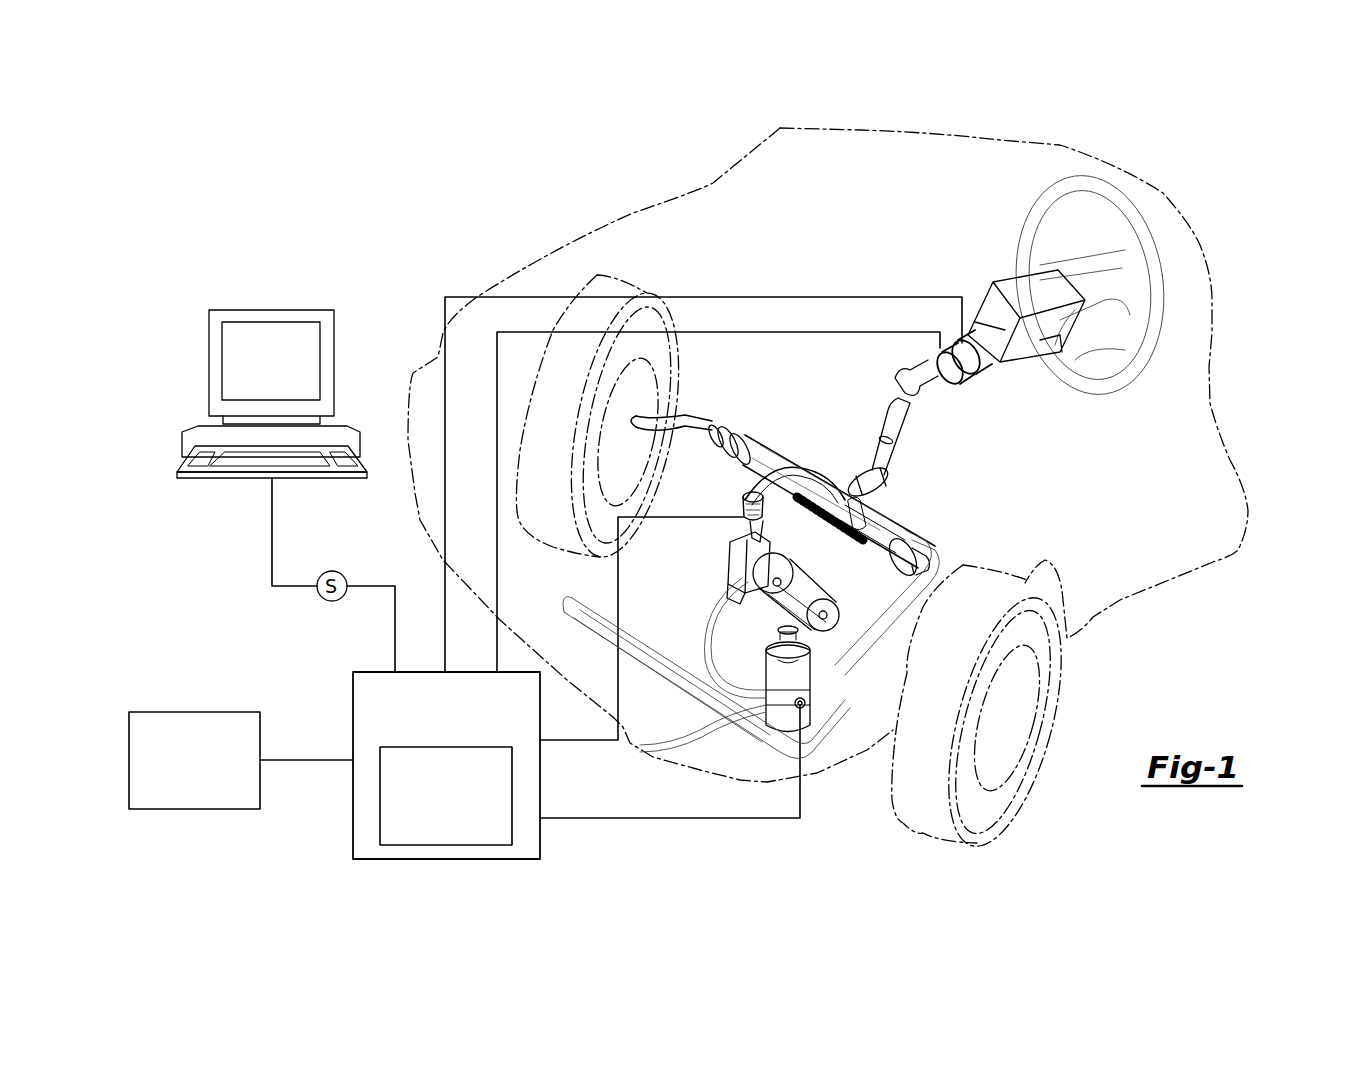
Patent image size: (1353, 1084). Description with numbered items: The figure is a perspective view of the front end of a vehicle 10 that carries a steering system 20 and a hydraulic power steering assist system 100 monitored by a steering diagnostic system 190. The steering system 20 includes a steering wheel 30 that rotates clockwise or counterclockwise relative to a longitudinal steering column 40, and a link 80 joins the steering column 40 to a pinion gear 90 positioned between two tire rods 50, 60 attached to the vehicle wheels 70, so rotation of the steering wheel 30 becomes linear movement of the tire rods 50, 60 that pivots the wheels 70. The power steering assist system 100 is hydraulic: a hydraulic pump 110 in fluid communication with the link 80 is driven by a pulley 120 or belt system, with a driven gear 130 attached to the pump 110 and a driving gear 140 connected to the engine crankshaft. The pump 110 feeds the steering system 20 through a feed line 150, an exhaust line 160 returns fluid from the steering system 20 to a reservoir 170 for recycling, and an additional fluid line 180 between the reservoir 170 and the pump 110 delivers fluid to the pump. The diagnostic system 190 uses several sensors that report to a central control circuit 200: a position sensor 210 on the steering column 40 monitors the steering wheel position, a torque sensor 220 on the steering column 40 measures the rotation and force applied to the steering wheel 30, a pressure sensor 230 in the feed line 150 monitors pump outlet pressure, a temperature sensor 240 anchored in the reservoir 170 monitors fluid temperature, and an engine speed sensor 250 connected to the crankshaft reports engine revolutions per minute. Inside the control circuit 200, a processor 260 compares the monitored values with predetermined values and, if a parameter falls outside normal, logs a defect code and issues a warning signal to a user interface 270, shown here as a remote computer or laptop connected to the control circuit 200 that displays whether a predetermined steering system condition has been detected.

The vehicle 10 is at (1287, 130).
The steering system 20 is at (990, 448).
The steering wheel 30 is at (1040, 215).
The steering column 40 is at (1000, 340).
The tire rod 50 is at (680, 405).
The tire rod 60 is at (930, 590).
The vehicle wheels 70 is at (640, 297).
The link 80 is at (877, 463).
The pinion gear 90 is at (840, 522).
The power steering assist system 100 is at (730, 535).
The hydraulic pump 110 is at (740, 556).
The pulley 120 is at (783, 615).
The driven gear 130 is at (790, 572).
The driving gear 140 is at (835, 612).
The feed line 150 is at (800, 475).
The exhaust line 160 is at (902, 520).
The reservoir 170 is at (798, 683).
The fluid line 180 is at (715, 658).
The steering diagnostic system 190 is at (593, 858).
The control circuit 200 is at (353, 697).
The position sensor 210 is at (983, 363).
The torque sensor 220 is at (937, 360).
The pressure sensor 230 is at (745, 502).
The temperature sensor 240 is at (806, 703).
The engine speed sensor 250 is at (193, 712).
The processor 260 is at (380, 800).
The user interface 270 is at (286, 370).